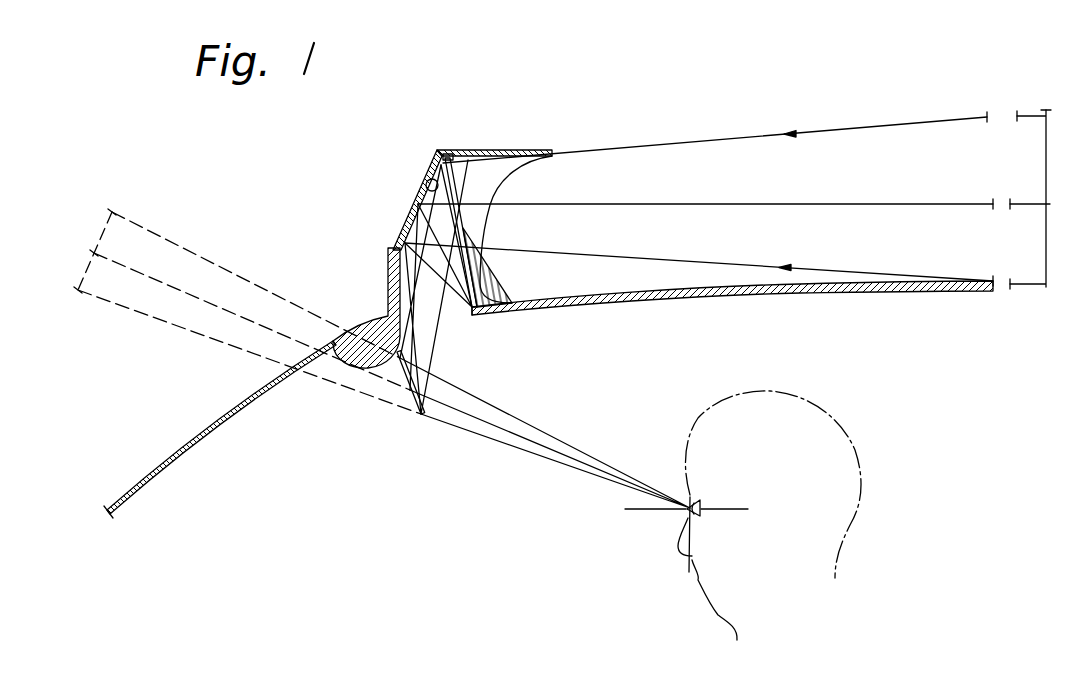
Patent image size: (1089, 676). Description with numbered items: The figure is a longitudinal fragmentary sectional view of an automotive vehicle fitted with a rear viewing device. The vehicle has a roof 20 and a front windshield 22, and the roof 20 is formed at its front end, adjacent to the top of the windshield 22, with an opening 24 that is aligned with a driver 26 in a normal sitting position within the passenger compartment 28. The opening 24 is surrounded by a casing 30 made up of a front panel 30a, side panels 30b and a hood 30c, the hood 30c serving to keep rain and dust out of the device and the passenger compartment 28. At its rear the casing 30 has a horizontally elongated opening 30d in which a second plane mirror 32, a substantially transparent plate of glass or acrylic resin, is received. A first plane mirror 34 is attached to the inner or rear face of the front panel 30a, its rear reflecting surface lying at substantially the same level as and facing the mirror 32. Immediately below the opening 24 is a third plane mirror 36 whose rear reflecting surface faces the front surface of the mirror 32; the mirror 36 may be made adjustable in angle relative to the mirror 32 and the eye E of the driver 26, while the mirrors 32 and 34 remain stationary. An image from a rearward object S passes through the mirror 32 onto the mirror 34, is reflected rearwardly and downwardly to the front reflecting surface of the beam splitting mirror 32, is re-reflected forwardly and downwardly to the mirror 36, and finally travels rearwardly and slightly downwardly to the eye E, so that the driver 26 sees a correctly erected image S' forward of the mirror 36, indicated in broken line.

The roof 20 is at (692, 297).
The front windshield 22 is at (195, 445).
The opening 24 is at (471, 313).
The driver 26 is at (783, 466).
The passenger compartment 28 is at (617, 389).
The casing 30 is at (388, 284).
The front panel 30a is at (412, 203).
The side panels 30b is at (485, 277).
The hood 30c is at (497, 150).
The horizontally elongated opening 30d is at (555, 172).
The second plane mirror 32 is at (462, 225).
The first plane mirror 34 is at (427, 179).
The third plane mirror 36 is at (423, 420).
The eye E is at (687, 517).
The object to be viewed S is at (728, 199).
The correctly erected image S' is at (243, 311).